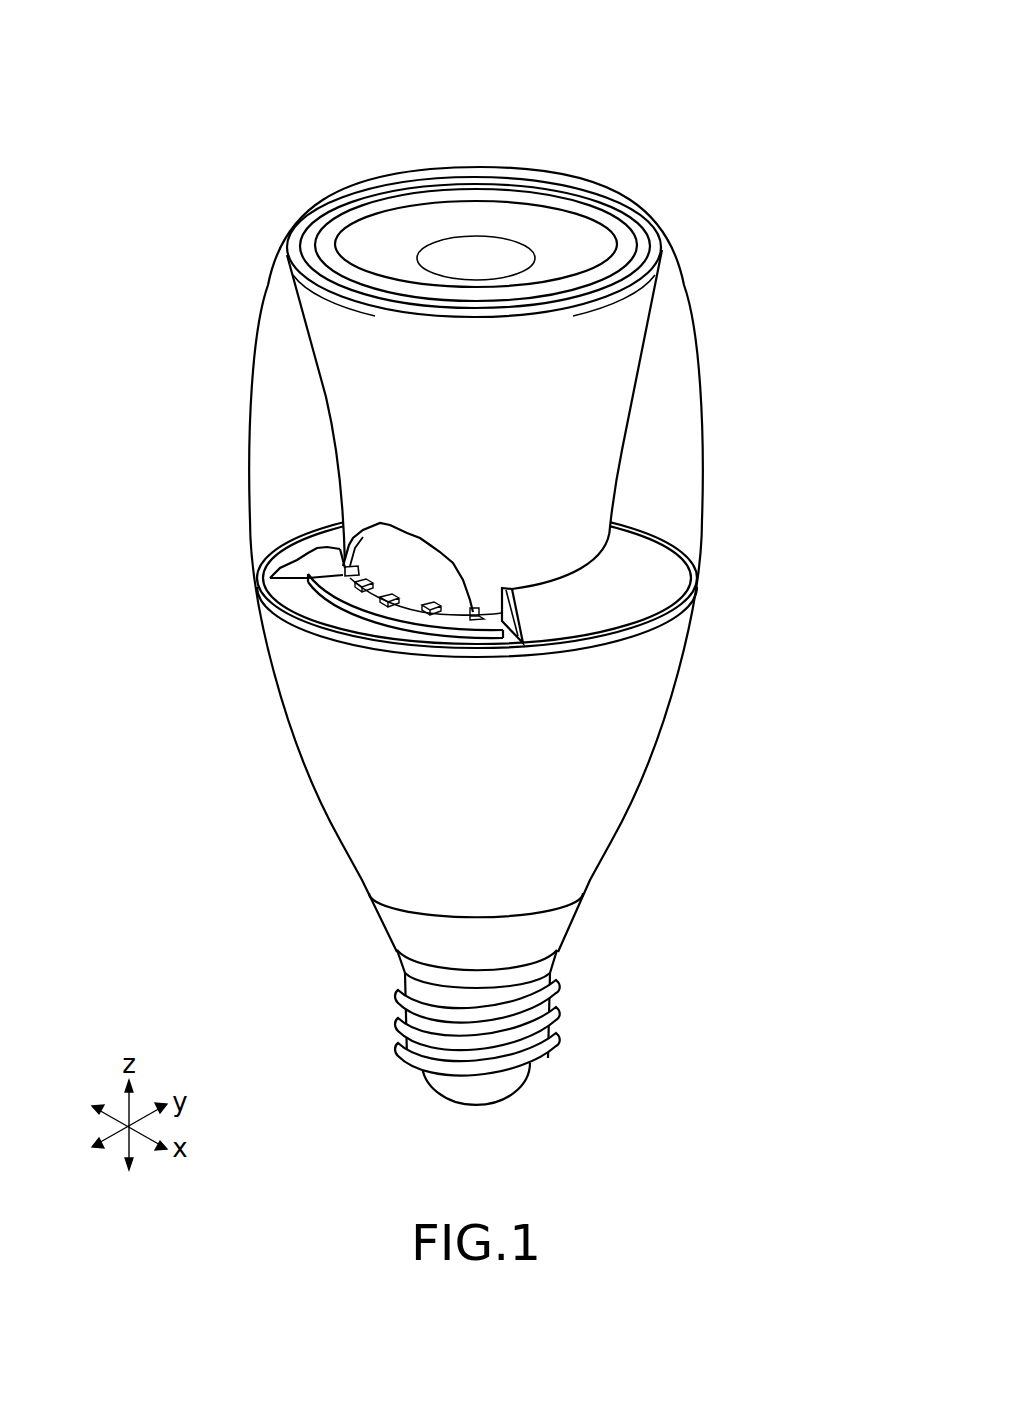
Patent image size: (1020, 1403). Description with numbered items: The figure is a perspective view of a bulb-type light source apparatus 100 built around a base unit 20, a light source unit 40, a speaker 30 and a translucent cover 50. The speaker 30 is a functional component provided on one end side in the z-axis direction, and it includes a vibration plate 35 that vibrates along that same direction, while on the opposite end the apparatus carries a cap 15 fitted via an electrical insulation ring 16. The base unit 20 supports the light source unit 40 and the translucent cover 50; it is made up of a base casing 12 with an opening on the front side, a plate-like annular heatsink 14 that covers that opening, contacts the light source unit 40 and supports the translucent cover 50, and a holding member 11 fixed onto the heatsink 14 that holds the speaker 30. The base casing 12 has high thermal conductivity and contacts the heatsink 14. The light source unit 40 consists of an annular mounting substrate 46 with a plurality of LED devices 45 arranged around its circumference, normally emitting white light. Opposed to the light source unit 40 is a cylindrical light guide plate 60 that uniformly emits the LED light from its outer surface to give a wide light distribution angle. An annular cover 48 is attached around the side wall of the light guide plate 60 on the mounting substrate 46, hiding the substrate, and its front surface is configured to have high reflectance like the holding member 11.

The light source apparatus 100 is at (491, 133).
The speaker 30 is at (431, 224).
The vibration plate 35 is at (560, 215).
The translucent cover 50 is at (260, 335).
The light guide plate 60 is at (605, 432).
The cover 48 is at (648, 568).
The base unit 20 is at (158, 495).
The holding member 11 is at (390, 548).
The heatsink 14 is at (273, 590).
The base casing 12 is at (278, 628).
The light source unit 40 is at (217, 672).
The mounting substrate 46 is at (368, 607).
The LED devices 45 is at (418, 612).
The electrical insulation ring 16 is at (558, 957).
The cap 15 is at (558, 1000).